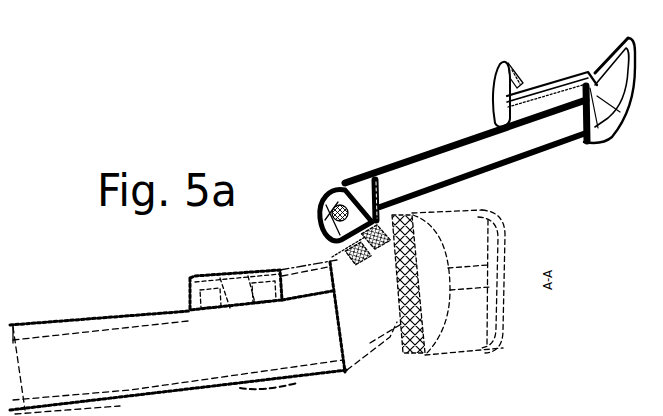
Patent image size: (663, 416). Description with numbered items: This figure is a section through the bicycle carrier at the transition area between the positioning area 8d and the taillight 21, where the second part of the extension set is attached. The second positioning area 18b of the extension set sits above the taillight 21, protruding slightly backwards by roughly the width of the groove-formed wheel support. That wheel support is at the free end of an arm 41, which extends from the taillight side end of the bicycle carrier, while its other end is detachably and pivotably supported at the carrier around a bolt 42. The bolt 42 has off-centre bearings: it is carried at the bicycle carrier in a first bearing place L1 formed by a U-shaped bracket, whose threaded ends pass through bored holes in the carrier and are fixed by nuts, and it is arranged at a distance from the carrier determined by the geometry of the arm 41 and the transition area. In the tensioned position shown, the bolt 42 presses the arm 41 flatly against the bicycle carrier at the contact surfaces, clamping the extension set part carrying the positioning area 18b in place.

The positioning area 8d is at (217, 268).
The arm 41 is at (440, 163).
The bolt 42 is at (340, 212).
The first bearing place L1 is at (334, 215).
The second positioning area 18b is at (573, 147).
The taillight 21 is at (465, 323).